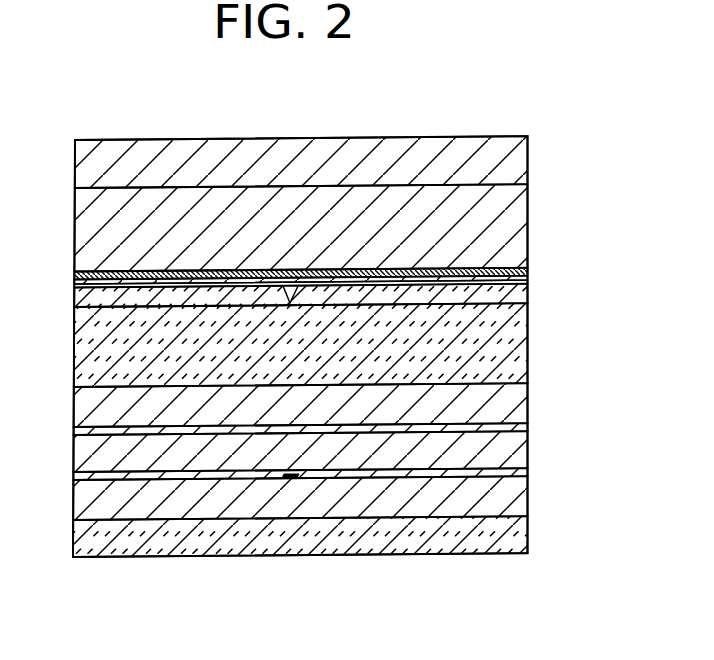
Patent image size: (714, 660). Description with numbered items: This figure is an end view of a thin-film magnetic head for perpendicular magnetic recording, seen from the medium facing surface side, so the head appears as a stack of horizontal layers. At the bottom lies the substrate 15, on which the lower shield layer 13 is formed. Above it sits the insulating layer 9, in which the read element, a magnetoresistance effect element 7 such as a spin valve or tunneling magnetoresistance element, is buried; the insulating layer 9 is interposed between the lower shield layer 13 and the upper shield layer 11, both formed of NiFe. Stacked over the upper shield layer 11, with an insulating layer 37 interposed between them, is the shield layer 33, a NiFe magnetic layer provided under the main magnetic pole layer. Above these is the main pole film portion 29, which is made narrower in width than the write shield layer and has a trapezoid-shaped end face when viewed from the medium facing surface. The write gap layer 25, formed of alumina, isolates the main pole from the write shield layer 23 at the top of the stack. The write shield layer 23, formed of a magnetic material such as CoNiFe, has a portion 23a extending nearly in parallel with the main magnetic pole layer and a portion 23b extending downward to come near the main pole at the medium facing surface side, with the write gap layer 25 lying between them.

The magnetoresistance effect element 7 is at (298, 480).
The insulating layer 9 is at (382, 475).
The upper shield layer 11 is at (208, 457).
The lower shield layer 13 is at (125, 505).
The substrate 15 is at (473, 532).
The write shield layer 23 is at (300, 166).
The portion extending nearly in parallel with the main magnetic pole layer 23a is at (130, 167).
The portion extending downward 23b is at (200, 223).
The write gap layer 25 is at (362, 288).
The main pole film portion 29 is at (316, 272).
The shield layer 33 is at (480, 400).
The insulating layer 37 is at (503, 425).